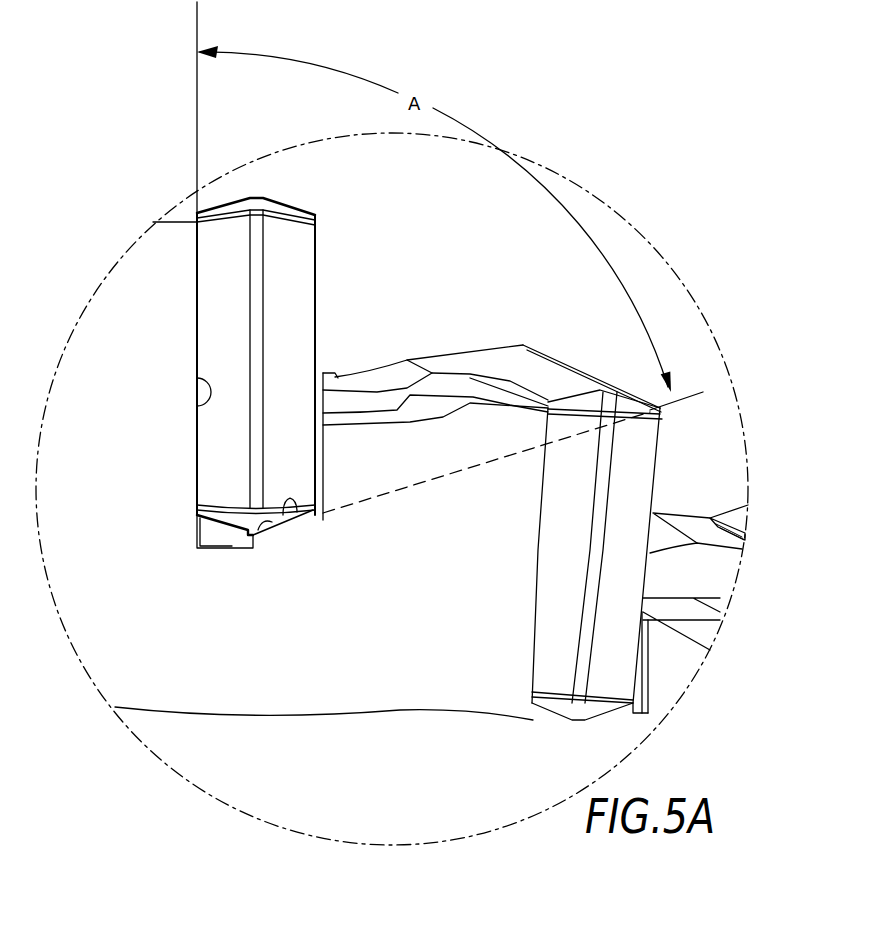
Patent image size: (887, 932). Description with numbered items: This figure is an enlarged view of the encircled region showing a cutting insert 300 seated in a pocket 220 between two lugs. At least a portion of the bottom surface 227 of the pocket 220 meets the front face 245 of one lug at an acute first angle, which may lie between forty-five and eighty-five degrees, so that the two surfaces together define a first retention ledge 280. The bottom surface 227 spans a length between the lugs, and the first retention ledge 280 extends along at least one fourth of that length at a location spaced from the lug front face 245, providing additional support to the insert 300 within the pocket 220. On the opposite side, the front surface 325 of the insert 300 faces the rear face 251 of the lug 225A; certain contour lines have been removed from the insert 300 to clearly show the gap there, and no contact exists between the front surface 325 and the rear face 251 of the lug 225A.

The cutting insert 300 is at (297, 205).
The front surface of the insert 325 is at (317, 272).
The front face of the lug 245 is at (197, 379).
The rear face of the lug 251 is at (323, 483).
The pocket 220 is at (213, 537).
The bottom surface of the pocket 227 is at (262, 523).
The first retention ledge 280 is at (323, 517).
The lug 225A is at (490, 522).